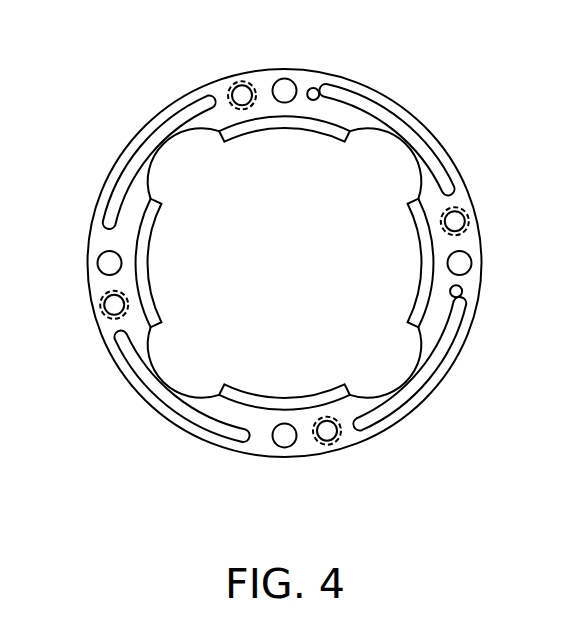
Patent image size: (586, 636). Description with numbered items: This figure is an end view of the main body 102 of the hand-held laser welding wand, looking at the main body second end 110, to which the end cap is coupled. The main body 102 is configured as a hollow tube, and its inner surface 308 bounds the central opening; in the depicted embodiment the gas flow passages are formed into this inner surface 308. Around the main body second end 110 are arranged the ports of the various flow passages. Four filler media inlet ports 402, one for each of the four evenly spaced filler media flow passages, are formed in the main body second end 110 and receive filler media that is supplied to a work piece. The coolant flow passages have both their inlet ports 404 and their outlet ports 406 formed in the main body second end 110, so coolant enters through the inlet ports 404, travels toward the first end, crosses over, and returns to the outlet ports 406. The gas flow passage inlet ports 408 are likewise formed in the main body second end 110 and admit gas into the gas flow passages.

The main body 102 is at (408, 87).
The second end 110 is at (243, 81).
The inner surface 308 is at (149, 263).
The inlet port 402 is at (290, 88).
The inlet port 404 is at (415, 137).
The outlet port 406 is at (130, 160).
The inlet port 408 is at (193, 143).